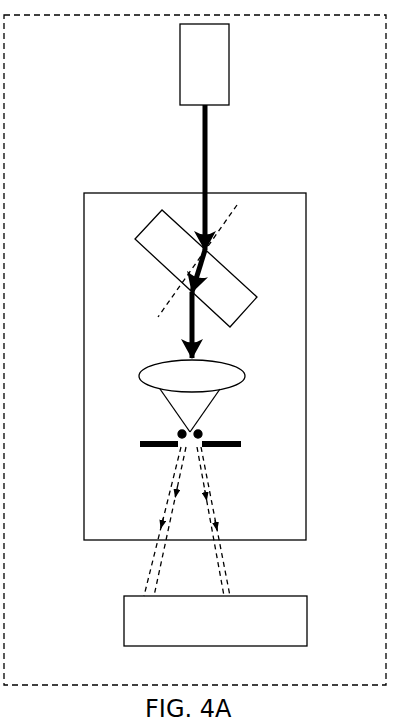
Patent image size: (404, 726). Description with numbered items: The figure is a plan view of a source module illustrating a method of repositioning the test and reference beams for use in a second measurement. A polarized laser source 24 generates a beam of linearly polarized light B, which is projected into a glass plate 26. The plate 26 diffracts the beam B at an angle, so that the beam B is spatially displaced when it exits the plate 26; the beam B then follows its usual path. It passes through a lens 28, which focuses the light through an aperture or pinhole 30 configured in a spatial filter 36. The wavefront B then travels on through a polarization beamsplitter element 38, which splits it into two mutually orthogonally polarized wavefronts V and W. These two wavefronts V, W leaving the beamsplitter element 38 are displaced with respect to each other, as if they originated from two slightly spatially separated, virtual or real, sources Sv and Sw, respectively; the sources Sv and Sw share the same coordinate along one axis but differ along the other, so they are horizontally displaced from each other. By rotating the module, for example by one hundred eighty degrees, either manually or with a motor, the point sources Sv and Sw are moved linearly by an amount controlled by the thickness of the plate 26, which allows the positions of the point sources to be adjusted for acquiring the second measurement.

The polarized source 24 is at (175, 60).
The glass plate 26 is at (83, 192).
The beam B is at (199, 152).
The lens 28 is at (152, 364).
The pinhole 30 is at (173, 412).
The source Sv is at (173, 433).
The source Sw is at (207, 429).
The spatial filter 36 is at (158, 452).
The wavefront W is at (212, 487).
The wavefront V is at (212, 518).
The polarization beamsplitter element 38 is at (118, 624).